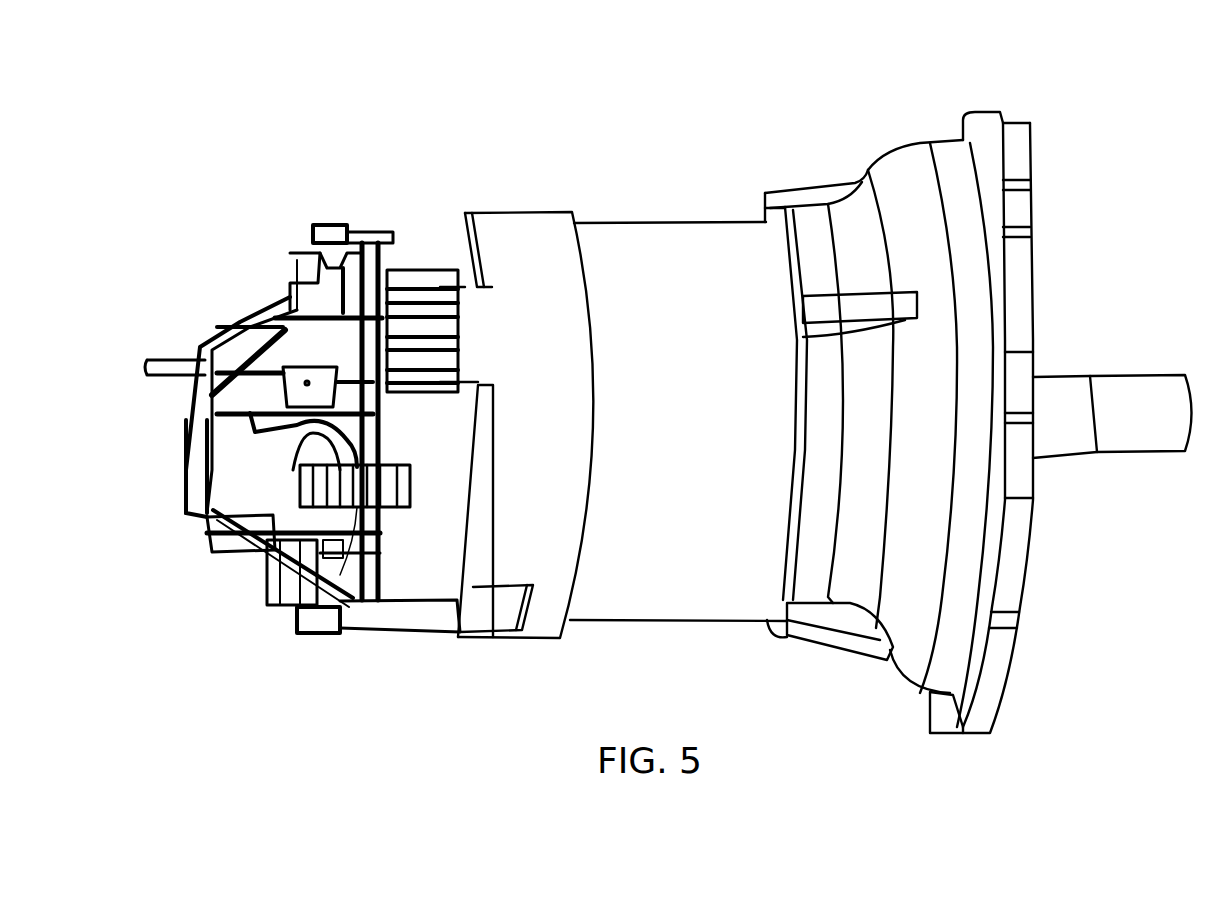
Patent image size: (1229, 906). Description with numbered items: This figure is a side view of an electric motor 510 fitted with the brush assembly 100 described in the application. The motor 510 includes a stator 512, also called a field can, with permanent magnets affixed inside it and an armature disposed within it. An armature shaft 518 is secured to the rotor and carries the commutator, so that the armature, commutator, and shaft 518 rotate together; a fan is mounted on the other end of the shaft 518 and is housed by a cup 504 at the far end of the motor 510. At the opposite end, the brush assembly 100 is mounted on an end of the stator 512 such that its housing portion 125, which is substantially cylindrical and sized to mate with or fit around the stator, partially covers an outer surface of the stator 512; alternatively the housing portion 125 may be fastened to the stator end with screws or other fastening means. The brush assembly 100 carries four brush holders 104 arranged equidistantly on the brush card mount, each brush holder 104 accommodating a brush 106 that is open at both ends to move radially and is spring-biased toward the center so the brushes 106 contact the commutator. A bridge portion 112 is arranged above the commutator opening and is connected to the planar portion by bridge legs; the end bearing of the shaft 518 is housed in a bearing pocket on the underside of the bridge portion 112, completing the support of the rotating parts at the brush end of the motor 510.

The electric motor 510 is at (517, 83).
The stator 512 is at (683, 245).
The cup 504 is at (913, 158).
The armature shaft 518 is at (1130, 430).
The brush assembly 100 is at (208, 280).
The brush holder 104 is at (290, 283).
The brush 106 is at (327, 603).
The bridge portion 112 is at (197, 500).
The housing portion 125 is at (417, 585).